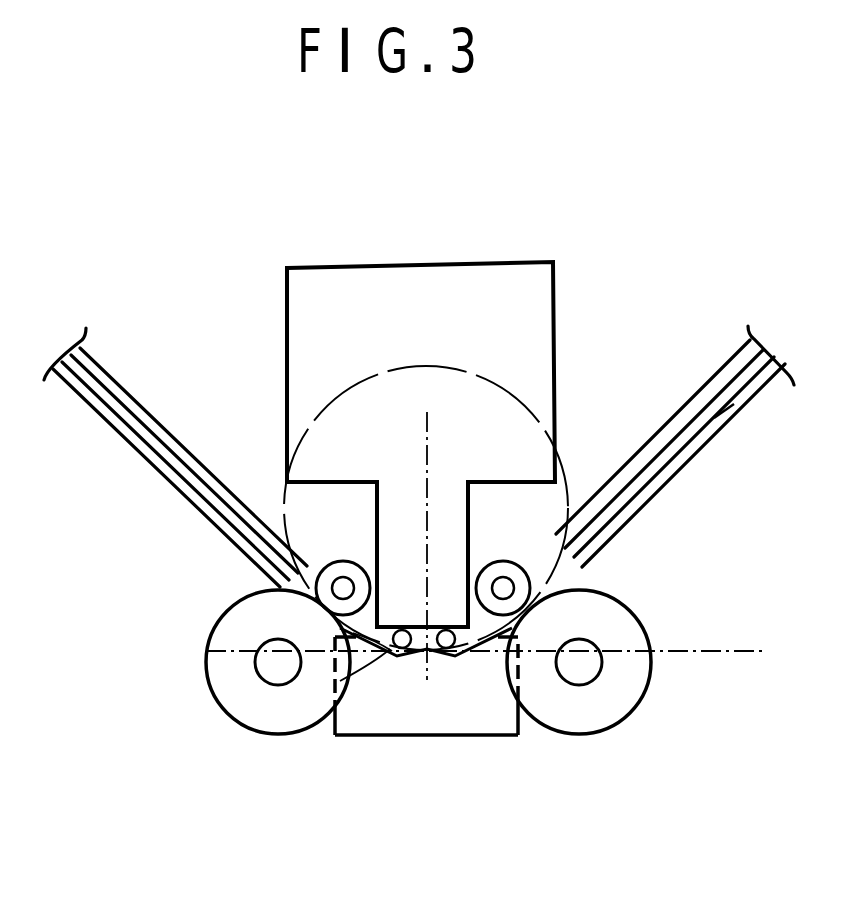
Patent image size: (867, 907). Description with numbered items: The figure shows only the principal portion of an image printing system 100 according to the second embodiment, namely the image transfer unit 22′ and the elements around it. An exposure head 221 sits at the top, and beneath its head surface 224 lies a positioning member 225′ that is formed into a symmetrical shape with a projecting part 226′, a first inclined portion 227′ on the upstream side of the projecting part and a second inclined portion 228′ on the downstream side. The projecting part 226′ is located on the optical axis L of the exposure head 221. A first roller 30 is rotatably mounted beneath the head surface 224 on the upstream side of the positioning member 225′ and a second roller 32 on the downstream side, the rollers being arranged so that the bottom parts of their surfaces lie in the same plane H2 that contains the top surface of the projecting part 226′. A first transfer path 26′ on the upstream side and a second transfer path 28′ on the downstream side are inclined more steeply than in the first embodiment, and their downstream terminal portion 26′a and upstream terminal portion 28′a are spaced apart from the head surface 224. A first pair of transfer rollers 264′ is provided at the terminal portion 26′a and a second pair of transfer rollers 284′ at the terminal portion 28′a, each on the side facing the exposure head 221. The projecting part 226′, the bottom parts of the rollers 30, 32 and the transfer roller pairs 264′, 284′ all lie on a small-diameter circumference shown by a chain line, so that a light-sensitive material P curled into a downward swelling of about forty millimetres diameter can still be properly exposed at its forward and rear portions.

The image printing system 100 is at (592, 168).
The image transfer unit 22′ is at (484, 373).
The exposure head 221 is at (527, 313).
The head surface 224 is at (403, 629).
The optical axis L is at (430, 452).
The plane H2 is at (518, 653).
The second transfer path 28′ is at (123, 385).
The first transfer path 26′ is at (677, 423).
The light-sensitive material P is at (728, 412).
The upstream terminal portion 28′a is at (341, 490).
The downstream terminal portion 26′a is at (530, 490).
The second pair of transfer rollers 284′ is at (252, 729).
The first pair of transfer rollers 264′ is at (623, 693).
The positioning member 225′ is at (497, 720).
The first inclined portion 227′ is at (428, 660).
The projecting part 226′ is at (411, 660).
The first roller 30 is at (453, 657).
The second inclined portion 228′ is at (392, 651).
The second roller 32 is at (340, 681).